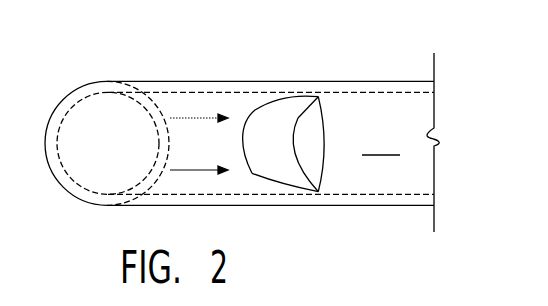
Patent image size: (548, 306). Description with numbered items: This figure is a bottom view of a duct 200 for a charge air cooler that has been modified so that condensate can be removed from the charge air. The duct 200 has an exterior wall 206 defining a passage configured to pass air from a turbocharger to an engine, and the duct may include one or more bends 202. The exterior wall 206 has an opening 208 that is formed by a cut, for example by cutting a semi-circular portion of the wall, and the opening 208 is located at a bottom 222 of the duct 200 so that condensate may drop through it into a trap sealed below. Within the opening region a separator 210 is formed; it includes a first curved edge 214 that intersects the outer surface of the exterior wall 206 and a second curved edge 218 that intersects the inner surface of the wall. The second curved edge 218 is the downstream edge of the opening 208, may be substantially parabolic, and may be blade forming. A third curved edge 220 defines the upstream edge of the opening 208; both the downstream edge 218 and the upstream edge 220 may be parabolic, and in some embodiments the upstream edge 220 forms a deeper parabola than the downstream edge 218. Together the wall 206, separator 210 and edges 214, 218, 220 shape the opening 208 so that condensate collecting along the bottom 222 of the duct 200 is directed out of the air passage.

The duct 200 is at (418, 82).
The bend 202 is at (117, 82).
The exterior wall 206 is at (70, 97).
The opening 208 is at (260, 115).
The separator 210 is at (297, 127).
The first curved edge 214 is at (323, 110).
The second curved edge 218 is at (294, 121).
The third curved edge 220 is at (258, 178).
The bottom 222 is at (381, 145).